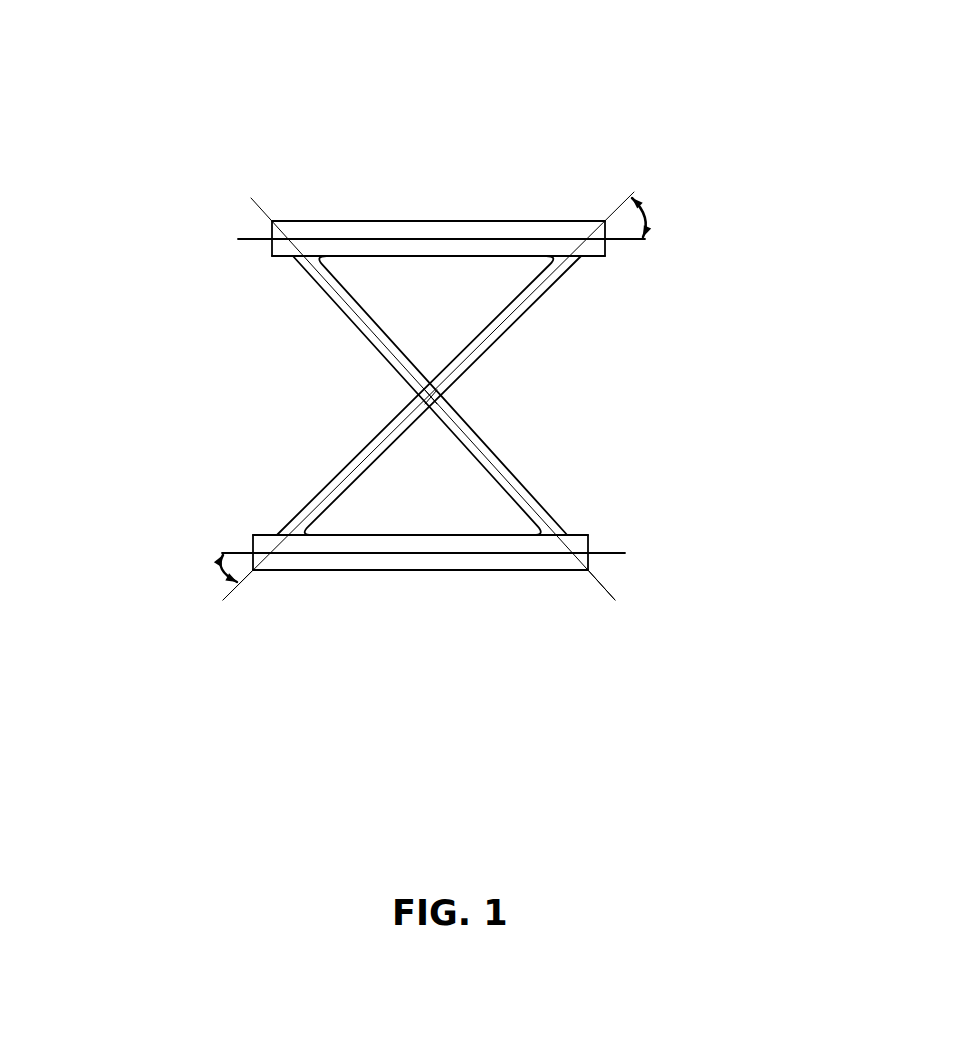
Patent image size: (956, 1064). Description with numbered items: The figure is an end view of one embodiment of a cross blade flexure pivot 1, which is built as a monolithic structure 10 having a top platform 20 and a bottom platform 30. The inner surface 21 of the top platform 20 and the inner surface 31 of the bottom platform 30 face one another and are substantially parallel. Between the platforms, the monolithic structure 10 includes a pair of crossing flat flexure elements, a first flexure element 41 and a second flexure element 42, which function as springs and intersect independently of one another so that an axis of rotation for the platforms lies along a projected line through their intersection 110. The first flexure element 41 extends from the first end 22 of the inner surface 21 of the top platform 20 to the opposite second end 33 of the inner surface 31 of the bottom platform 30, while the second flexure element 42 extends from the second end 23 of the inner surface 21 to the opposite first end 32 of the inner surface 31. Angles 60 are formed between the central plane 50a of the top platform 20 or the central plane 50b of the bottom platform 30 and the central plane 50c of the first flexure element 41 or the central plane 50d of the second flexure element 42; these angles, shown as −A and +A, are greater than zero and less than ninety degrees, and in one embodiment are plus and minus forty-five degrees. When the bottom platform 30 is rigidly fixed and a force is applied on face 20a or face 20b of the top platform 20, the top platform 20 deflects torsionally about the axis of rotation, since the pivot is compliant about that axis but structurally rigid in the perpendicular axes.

The cross blade flexure pivot 1 is at (455, 336).
The monolithic structure 10 is at (455, 401).
The top platform 20 is at (548, 221).
The face of top platform 20a is at (612, 252).
The face of top platform 20b is at (267, 250).
The inner surface of top platform 21 is at (393, 257).
The first end of inner surface of top platform 22 is at (595, 262).
The second end of inner surface of top platform 23 is at (290, 262).
The bottom platform 30 is at (408, 566).
The inner surface of bottom platform 31 is at (353, 535).
The first end of inner surface of bottom platform 32 is at (577, 522).
The second end of inner surface of bottom platform 33 is at (265, 528).
The first flexure element 41 is at (525, 313).
The second flexure element 42 is at (510, 463).
The intersection of the pair of crossing flat flexure elements 110 is at (496, 391).
The central plane of top platform 50a is at (246, 236).
The central plane of bottom platform 50b is at (613, 550).
The central plane of first flexure element 50c is at (247, 580).
The central plane of second flexure element 50d is at (607, 588).
The angles 60 is at (248, 217).